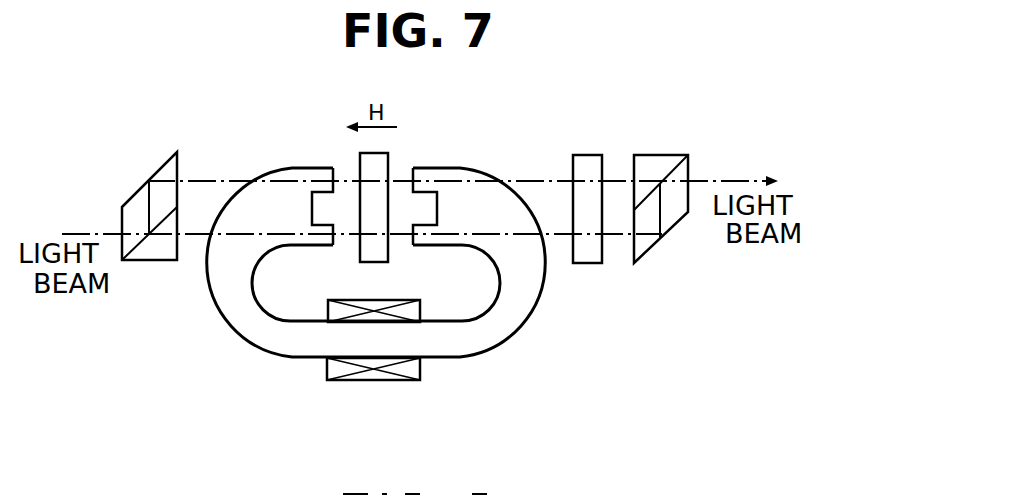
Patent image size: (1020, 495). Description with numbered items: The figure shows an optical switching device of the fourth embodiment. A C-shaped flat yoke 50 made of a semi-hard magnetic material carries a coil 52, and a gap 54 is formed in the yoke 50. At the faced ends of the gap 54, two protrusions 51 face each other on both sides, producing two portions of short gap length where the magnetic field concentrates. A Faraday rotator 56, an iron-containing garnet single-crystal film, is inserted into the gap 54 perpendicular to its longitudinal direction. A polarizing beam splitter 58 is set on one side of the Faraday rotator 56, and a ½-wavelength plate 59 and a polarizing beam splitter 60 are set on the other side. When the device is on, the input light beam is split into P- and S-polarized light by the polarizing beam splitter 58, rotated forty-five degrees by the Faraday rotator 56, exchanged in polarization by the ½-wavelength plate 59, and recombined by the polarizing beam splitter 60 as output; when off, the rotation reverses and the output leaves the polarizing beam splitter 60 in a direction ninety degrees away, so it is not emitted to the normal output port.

The yoke 50 is at (515, 327).
The protrusions 51 is at (320, 175).
The coil 52 is at (418, 367).
The gap 54 is at (400, 177).
The Faraday rotator 56 is at (363, 162).
The polarizing beam splitter 58 is at (140, 190).
The ½-wavelength plate 59 is at (588, 163).
The polarizing beam splitter 60 is at (660, 160).